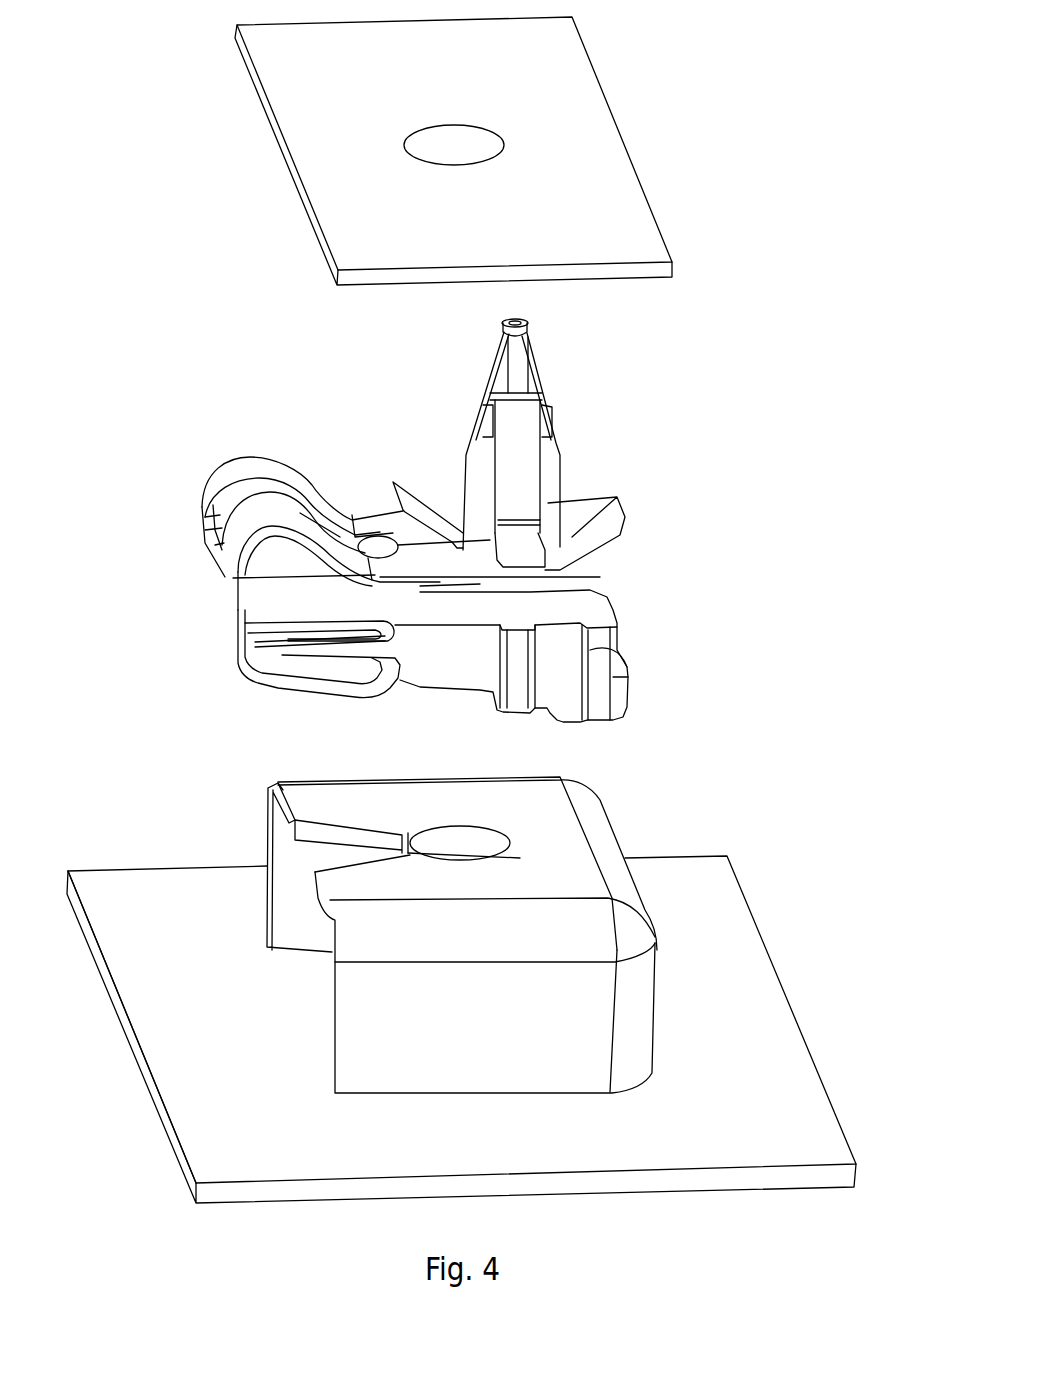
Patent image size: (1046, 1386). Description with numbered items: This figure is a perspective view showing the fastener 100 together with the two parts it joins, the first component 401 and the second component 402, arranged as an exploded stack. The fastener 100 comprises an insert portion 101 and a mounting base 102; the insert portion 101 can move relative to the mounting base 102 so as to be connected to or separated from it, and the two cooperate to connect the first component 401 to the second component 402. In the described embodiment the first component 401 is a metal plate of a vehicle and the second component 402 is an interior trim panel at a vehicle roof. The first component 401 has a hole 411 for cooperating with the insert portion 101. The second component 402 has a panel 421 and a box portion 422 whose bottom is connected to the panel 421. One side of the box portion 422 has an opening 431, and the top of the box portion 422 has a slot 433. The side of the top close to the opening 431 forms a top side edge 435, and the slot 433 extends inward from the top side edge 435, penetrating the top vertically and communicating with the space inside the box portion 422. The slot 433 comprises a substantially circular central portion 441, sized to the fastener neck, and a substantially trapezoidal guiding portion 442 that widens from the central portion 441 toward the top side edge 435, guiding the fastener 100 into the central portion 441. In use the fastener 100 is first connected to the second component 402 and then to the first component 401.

The first component 401 is at (598, 183).
The hole 411 is at (440, 150).
The insert portion 101 is at (483, 467).
The fastener 100 is at (593, 510).
The mounting base 102 is at (583, 670).
The second component 402 is at (688, 874).
The panel 421 is at (114, 881).
The box portion 422 is at (279, 864).
The opening 431 is at (311, 967).
The slot 433 is at (373, 845).
The top side edge 435 is at (267, 797).
The central portion 441 is at (460, 847).
The guiding portion 442 is at (335, 857).